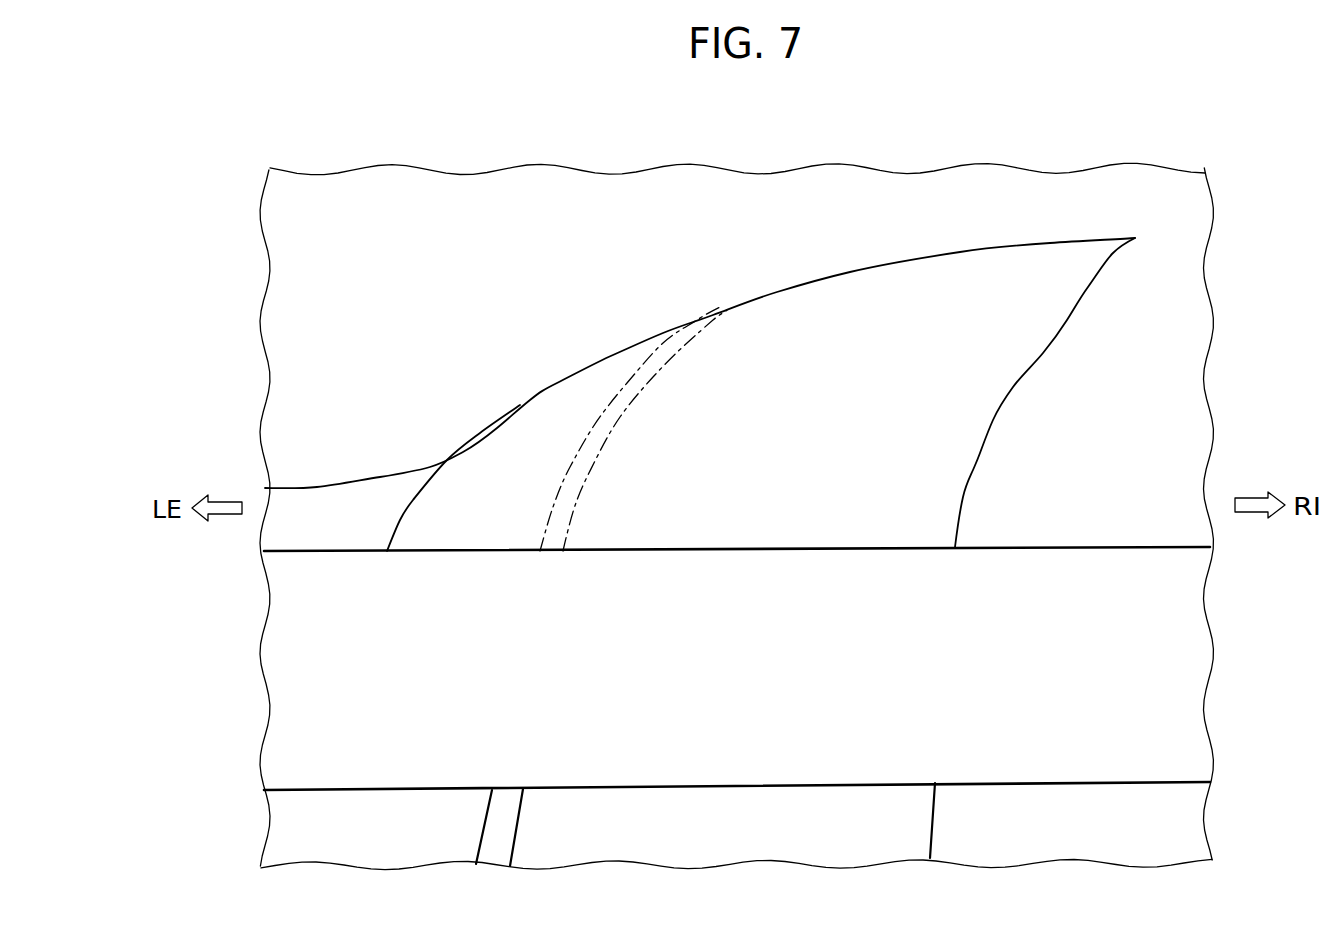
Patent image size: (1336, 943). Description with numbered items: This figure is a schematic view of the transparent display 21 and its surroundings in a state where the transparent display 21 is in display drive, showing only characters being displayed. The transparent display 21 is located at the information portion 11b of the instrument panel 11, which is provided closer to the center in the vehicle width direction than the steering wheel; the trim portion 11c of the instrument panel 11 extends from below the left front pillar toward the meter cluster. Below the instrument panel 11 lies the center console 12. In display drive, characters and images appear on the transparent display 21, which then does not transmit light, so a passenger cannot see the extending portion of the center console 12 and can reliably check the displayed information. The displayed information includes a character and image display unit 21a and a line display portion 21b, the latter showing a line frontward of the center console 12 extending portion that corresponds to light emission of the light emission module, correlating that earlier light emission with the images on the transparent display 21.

The instrument panel 11 is at (320, 322).
The information portion 11b is at (955, 297).
The trim portion 11c is at (313, 655).
The center console 12 is at (590, 840).
The transparent display 21 is at (700, 327).
The character and image display unit 21a is at (770, 337).
The line display portion 21b is at (620, 387).